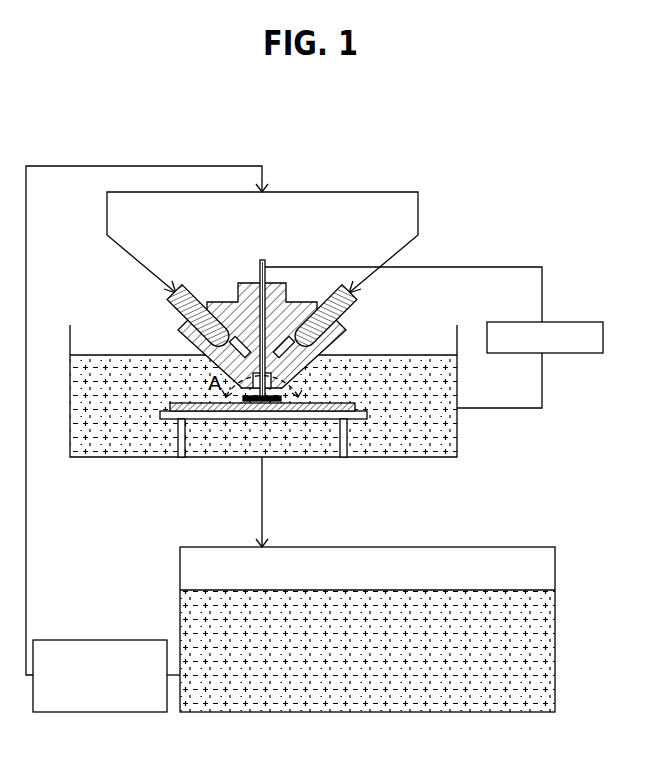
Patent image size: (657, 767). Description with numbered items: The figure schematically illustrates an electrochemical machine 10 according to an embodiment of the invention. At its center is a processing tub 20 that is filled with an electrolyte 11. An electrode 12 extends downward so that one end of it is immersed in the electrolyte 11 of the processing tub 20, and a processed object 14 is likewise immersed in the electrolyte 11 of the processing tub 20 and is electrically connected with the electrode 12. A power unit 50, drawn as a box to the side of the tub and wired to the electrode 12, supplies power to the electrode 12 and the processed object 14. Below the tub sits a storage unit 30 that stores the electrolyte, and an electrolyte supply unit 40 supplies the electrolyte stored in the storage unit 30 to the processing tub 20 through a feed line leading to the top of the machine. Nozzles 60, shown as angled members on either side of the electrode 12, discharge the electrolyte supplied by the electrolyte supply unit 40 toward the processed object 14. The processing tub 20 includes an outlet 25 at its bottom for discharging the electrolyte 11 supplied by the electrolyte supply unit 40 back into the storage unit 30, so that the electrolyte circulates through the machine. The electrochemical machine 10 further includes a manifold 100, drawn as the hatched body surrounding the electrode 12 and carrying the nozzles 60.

The electrochemical machine 10 is at (52, 106).
The electrode 12 is at (258, 290).
The manifold 100 is at (274, 300).
The nozzles 60 is at (198, 302).
The power unit 50 is at (576, 322).
The processing tub 20 is at (457, 430).
The electrolyte 11 is at (402, 440).
The processed object 14 is at (320, 411).
The outlet 25 is at (262, 457).
The storage unit 30 is at (493, 545).
The electrolyte supply unit 40 is at (100, 640).